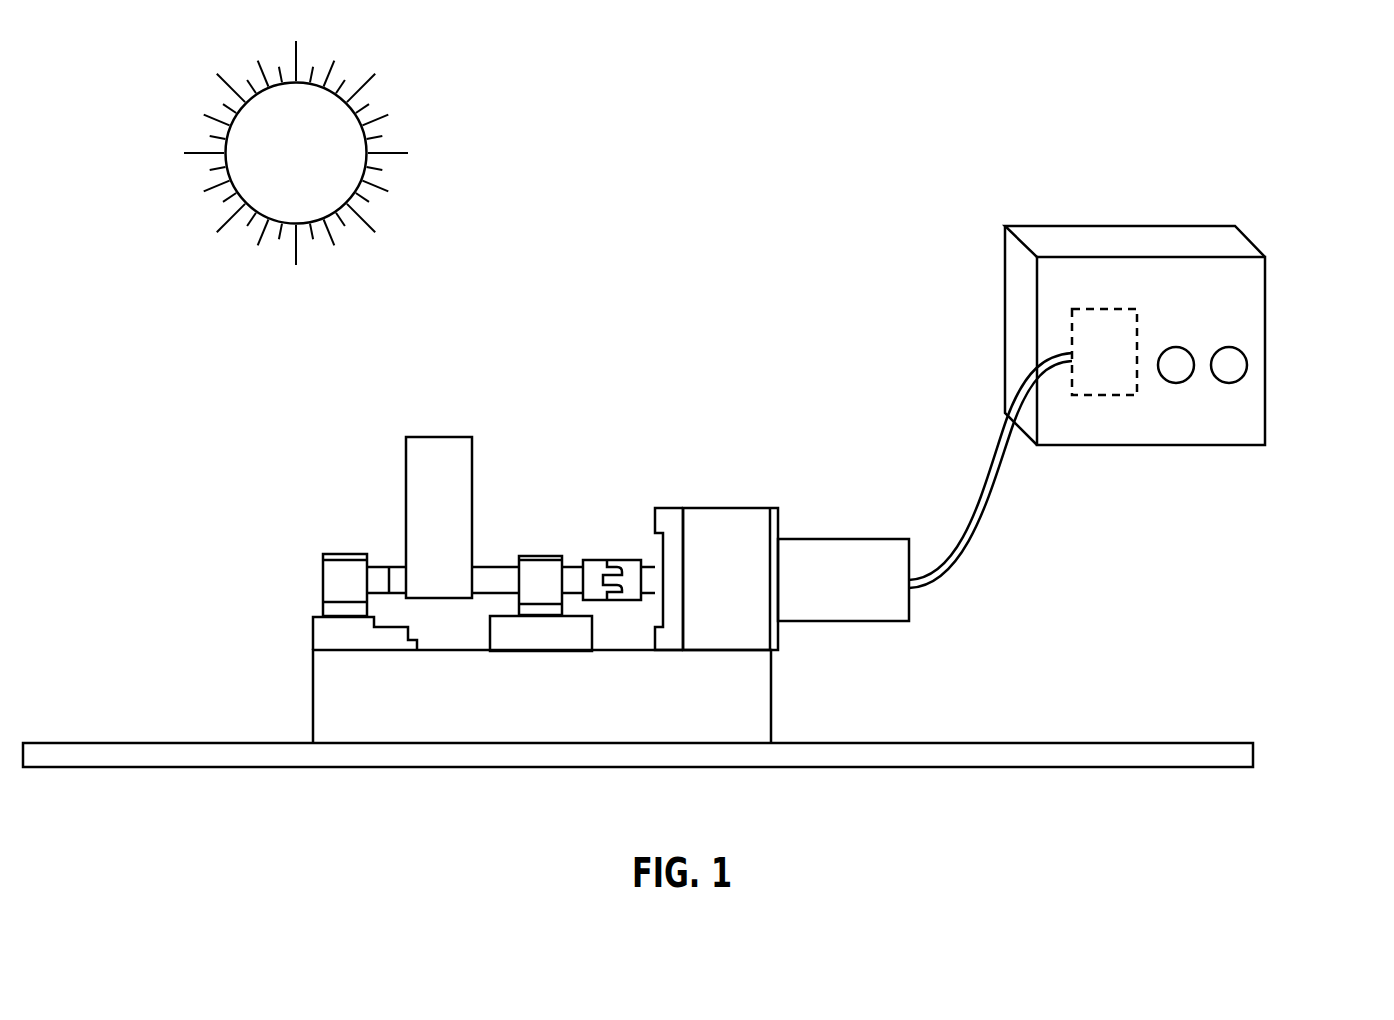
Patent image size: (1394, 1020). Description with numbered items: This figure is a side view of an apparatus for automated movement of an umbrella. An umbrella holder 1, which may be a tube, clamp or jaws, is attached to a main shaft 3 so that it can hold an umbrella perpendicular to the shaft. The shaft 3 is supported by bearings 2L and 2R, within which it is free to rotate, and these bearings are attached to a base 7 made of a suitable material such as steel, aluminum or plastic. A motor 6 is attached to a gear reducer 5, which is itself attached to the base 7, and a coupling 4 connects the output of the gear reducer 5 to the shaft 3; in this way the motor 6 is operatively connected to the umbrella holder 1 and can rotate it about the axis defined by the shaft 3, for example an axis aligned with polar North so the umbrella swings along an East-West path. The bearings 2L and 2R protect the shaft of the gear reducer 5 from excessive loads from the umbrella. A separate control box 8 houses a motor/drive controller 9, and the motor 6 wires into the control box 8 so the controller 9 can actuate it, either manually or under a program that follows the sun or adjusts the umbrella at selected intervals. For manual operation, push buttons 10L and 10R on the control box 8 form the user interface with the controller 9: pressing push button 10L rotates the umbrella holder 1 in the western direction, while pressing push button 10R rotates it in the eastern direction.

The umbrella holder 1 is at (422, 472).
The bearing 2L is at (333, 577).
The bearing 2R is at (535, 577).
The shaft 3 is at (489, 567).
The coupling 4 is at (604, 560).
The gear reducer 5 is at (727, 508).
The motor 6 is at (847, 539).
The base 7 is at (771, 722).
The control box 8 is at (1265, 288).
The motor/drive controller 9 is at (1112, 383).
The push button 10L is at (1178, 370).
The push button 10R is at (1247, 371).